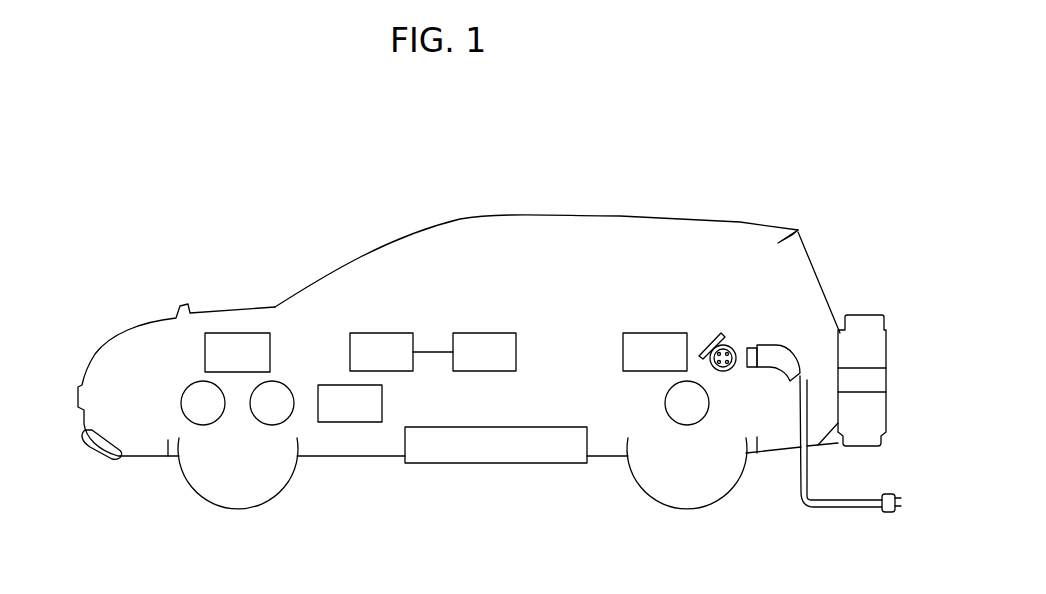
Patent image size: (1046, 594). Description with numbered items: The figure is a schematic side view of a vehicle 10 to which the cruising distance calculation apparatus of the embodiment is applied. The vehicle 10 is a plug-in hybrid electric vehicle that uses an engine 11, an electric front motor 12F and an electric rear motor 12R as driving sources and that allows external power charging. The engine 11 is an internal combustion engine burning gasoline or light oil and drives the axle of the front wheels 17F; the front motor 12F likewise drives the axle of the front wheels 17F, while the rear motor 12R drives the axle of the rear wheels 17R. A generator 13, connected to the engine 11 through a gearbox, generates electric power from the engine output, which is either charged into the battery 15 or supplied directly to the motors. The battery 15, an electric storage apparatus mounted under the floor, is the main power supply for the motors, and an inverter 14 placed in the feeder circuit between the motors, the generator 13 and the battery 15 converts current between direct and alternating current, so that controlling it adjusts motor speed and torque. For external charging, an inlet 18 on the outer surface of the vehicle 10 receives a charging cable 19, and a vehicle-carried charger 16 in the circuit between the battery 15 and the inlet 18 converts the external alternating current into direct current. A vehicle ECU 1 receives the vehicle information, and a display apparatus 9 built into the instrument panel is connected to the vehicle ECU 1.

The vehicle ECU 1 is at (383, 333).
The display apparatus 9 is at (487, 333).
The vehicle 10 is at (670, 190).
The engine 11 is at (236, 333).
The front motor 12F is at (252, 418).
The rear motor 12R is at (665, 402).
The generator 13 is at (181, 401).
The inverter 14 is at (352, 423).
The battery 15 is at (497, 466).
The vehicle-carried charger 16 is at (658, 333).
The front wheels 17F is at (232, 504).
The rear wheels 17R is at (695, 504).
The inlet 18 is at (729, 344).
The charging cable 19 is at (777, 346).